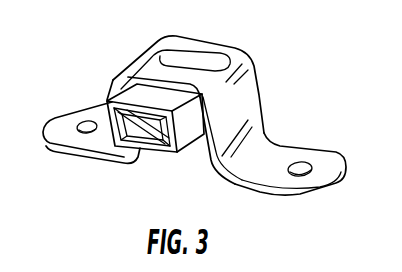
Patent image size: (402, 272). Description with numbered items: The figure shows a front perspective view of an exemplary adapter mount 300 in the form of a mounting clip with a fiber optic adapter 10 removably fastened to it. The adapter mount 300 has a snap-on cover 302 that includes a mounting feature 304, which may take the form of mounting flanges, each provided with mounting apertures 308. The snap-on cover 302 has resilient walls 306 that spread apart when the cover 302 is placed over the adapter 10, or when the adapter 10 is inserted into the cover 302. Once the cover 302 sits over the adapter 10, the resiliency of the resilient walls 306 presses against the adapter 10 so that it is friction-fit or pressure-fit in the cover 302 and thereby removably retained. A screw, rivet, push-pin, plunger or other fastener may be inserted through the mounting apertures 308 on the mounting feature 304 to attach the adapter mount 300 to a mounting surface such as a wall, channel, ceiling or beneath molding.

The fiber optic adapter 10 is at (108, 98).
The adapter mount 300 is at (202, 123).
The snap-on cover 302 is at (243, 51).
The mounting feature 304 is at (66, 152).
The resilient walls 306 is at (124, 80).
The mounting apertures 308 is at (86, 120).